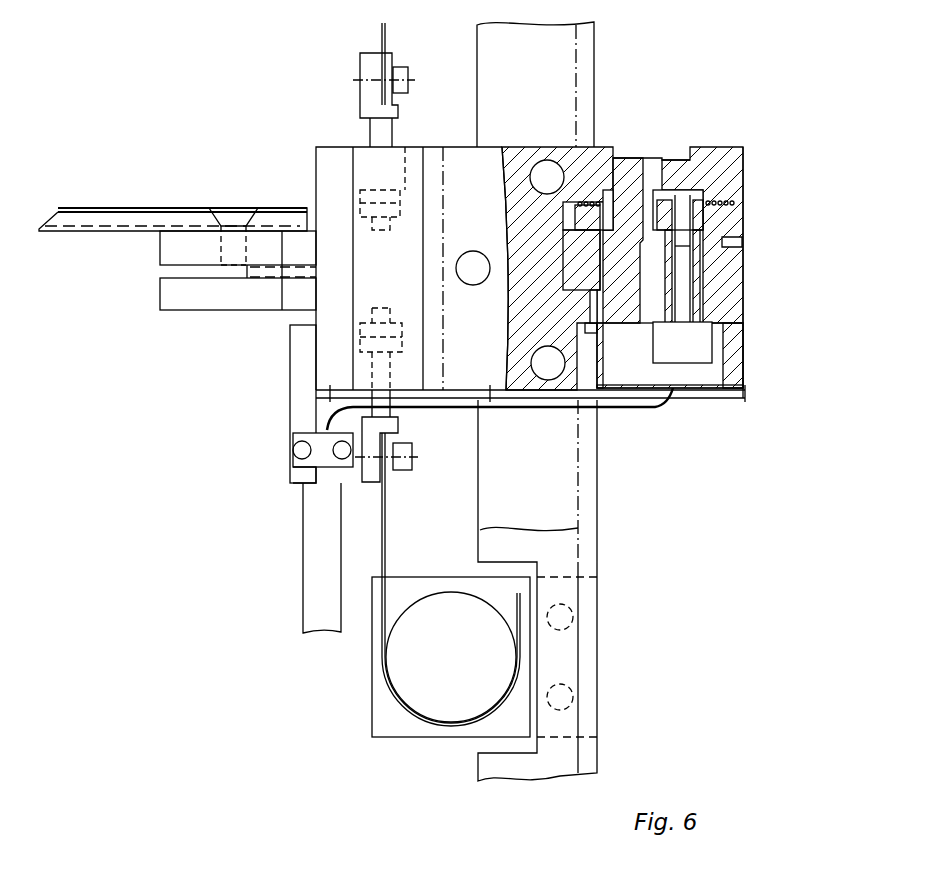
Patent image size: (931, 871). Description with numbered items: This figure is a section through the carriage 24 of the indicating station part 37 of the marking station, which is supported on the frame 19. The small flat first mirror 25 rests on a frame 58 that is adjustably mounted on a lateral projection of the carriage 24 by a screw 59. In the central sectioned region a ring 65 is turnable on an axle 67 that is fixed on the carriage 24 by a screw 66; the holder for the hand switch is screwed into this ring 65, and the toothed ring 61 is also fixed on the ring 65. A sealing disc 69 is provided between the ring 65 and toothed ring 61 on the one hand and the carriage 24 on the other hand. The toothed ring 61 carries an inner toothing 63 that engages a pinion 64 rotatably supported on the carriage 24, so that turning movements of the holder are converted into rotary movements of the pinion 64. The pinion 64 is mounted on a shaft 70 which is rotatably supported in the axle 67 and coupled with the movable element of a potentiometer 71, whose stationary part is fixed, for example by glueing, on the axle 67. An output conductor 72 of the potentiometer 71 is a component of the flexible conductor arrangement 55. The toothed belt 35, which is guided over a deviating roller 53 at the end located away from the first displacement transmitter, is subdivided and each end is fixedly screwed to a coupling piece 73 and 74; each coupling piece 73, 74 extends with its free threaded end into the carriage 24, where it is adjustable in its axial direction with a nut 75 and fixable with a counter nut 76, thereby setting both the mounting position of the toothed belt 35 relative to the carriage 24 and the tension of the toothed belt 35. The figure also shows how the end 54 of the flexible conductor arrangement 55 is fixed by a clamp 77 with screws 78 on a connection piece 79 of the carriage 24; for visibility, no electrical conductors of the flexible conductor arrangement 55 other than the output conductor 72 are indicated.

The frame 19 is at (604, 30).
The carriage 24 is at (723, 403).
The first mirror 25 is at (41, 222).
The toothed belt 35 is at (381, 27).
The indicating station part 37 is at (143, 407).
The deviating roller 53 is at (413, 600).
The end of flexible conductor arrangement 54 is at (293, 474).
The flexible conductor arrangement 55 is at (303, 606).
The frame 58 is at (104, 233).
The screw 59 is at (234, 207).
The toothed ring 61 is at (577, 205).
The inner toothing 63 is at (603, 197).
The pinion 64 is at (707, 200).
The ring 65 is at (745, 263).
The screw 66 is at (607, 328).
The axle 67 is at (632, 155).
The sealing disc 69 is at (587, 210).
The shaft 70 is at (683, 246).
The potentiometer 71 is at (687, 365).
The output conductor 72 is at (655, 405).
The coupling piece 73 is at (368, 512).
The coupling piece 74 is at (360, 70).
The nut 75 is at (401, 196).
The counter nut 76 is at (401, 213).
The clamp 77 is at (367, 484).
The screws 78 is at (293, 450).
The connection piece 79 is at (290, 378).